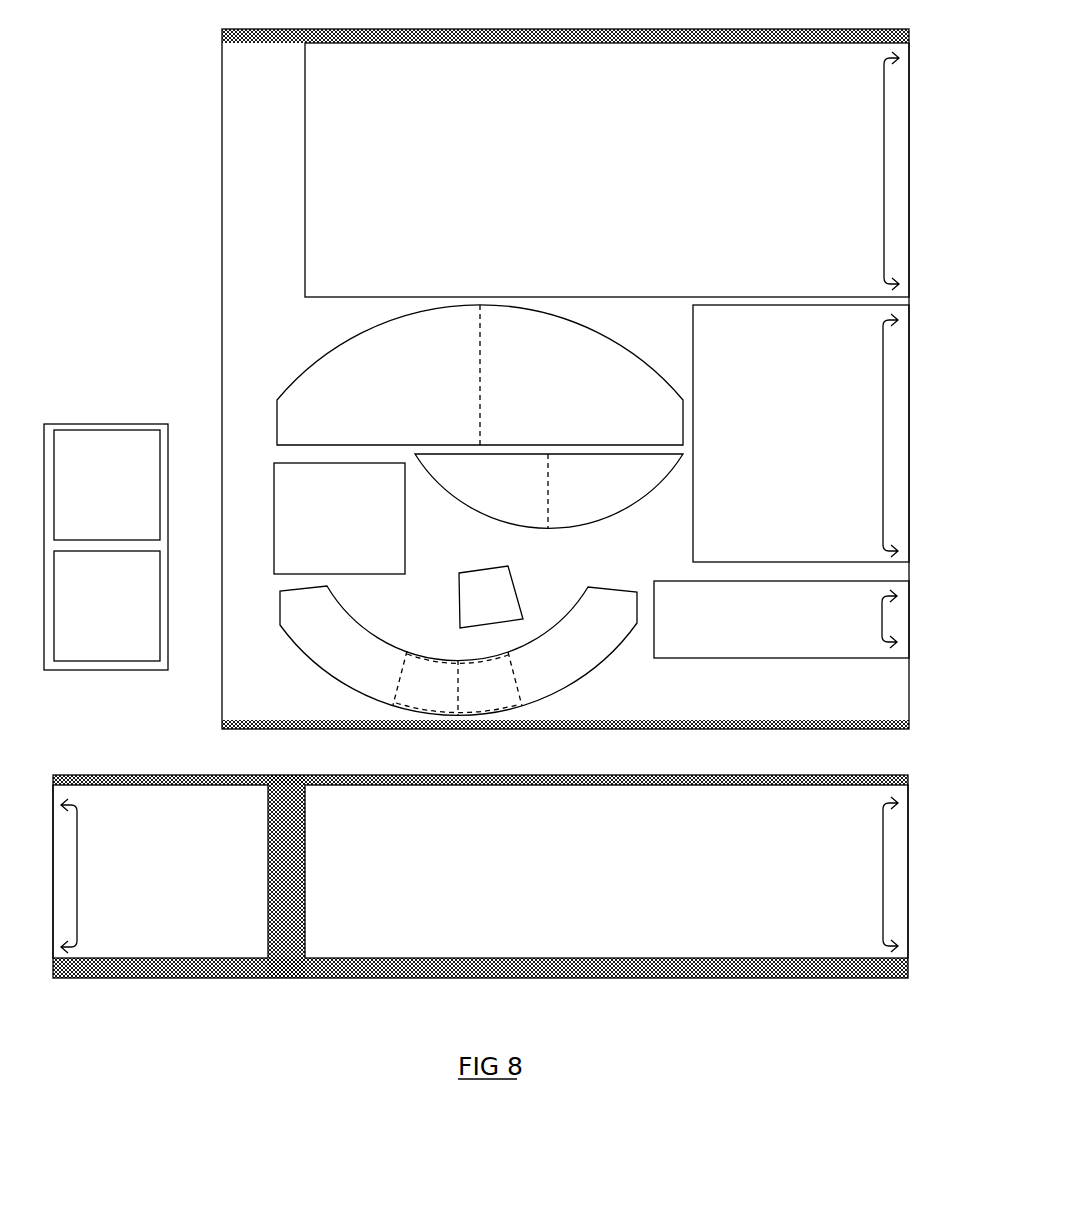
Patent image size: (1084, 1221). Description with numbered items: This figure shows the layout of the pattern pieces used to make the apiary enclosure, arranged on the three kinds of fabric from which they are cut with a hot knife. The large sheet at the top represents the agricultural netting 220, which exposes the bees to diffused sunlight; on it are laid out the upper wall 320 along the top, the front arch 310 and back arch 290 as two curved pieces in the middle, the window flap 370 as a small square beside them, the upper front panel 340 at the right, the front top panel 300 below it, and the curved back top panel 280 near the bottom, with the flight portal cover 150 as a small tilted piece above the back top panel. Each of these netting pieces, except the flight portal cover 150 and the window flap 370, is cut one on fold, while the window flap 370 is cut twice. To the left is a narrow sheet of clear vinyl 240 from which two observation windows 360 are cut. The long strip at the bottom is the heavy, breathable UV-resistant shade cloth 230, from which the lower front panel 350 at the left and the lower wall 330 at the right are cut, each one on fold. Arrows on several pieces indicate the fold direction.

The agricultural netting 220 is at (268, 100).
The upper wall 320 is at (893, 172).
The front arch 310 is at (328, 376).
The window flap 370 is at (285, 490).
The back arch 290 is at (603, 482).
The upper front panel 340 is at (893, 427).
The front top panel 300 is at (893, 618).
The back top panel 280 is at (322, 635).
The flight portal cover 150 is at (497, 607).
The clear vinyl 240 is at (50, 430).
The observation window 360 is at (145, 472).
The shade cloth 230 is at (285, 940).
The lower front panel 350 is at (160, 940).
The lower wall 330 is at (598, 940).